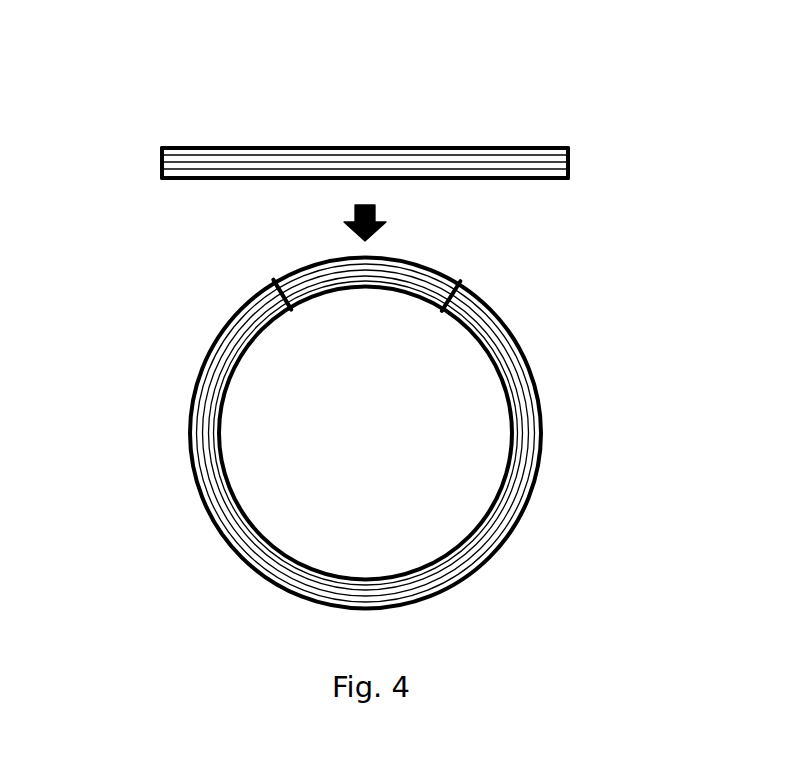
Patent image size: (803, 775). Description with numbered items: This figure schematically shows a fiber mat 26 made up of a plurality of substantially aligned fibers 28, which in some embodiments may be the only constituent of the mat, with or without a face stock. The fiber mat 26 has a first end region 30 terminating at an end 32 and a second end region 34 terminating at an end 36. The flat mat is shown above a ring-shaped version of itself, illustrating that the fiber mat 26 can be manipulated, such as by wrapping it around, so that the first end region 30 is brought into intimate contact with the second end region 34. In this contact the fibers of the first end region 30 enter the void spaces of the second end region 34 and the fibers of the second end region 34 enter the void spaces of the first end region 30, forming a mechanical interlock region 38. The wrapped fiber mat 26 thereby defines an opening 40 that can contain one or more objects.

The fiber mat 26 is at (209, 95).
The substantially aligned fibers 28 is at (483, 163).
The first end region 30 is at (165, 184).
The end 32 is at (163, 163).
The second end region 34 is at (557, 132).
The end 36 is at (572, 163).
The mechanical interlock region 38 is at (355, 292).
The opening 40 is at (429, 465).